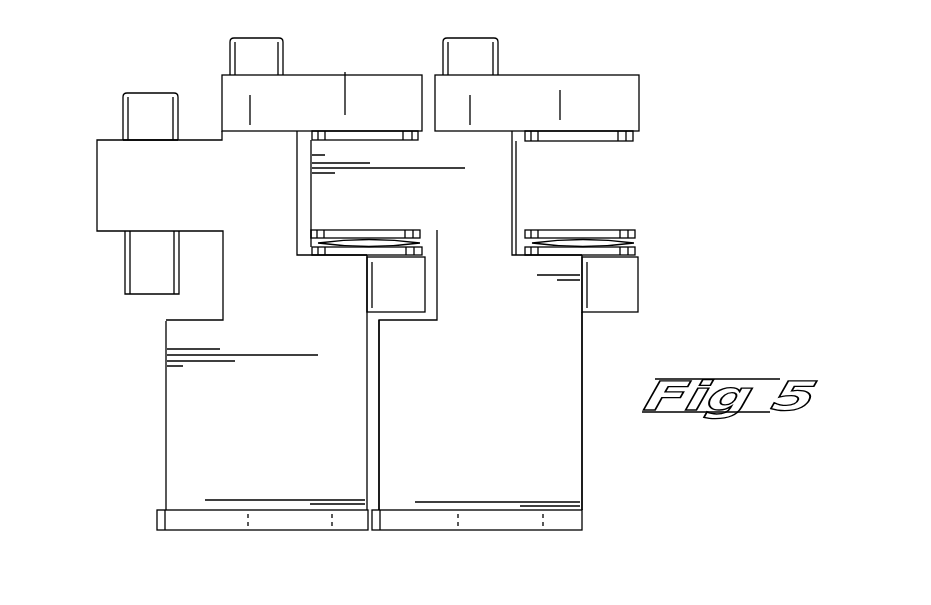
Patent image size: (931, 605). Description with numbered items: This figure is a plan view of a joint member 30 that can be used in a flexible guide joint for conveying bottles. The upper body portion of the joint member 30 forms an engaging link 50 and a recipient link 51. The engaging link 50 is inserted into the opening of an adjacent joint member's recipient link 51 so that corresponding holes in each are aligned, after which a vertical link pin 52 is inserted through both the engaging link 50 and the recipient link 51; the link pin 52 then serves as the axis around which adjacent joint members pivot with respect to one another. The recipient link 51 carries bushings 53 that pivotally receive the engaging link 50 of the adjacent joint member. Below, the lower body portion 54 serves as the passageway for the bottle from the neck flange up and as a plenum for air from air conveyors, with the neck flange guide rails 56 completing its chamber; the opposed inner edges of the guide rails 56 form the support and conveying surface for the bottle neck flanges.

The joint member 30 is at (137, 440).
The engaging link 50 is at (140, 187).
The recipient link 51 is at (350, 108).
The link pin 52 is at (143, 265).
The bushings 53 is at (567, 233).
The lower body portion 54 is at (285, 442).
The neck flange guide rails 56 is at (295, 520).